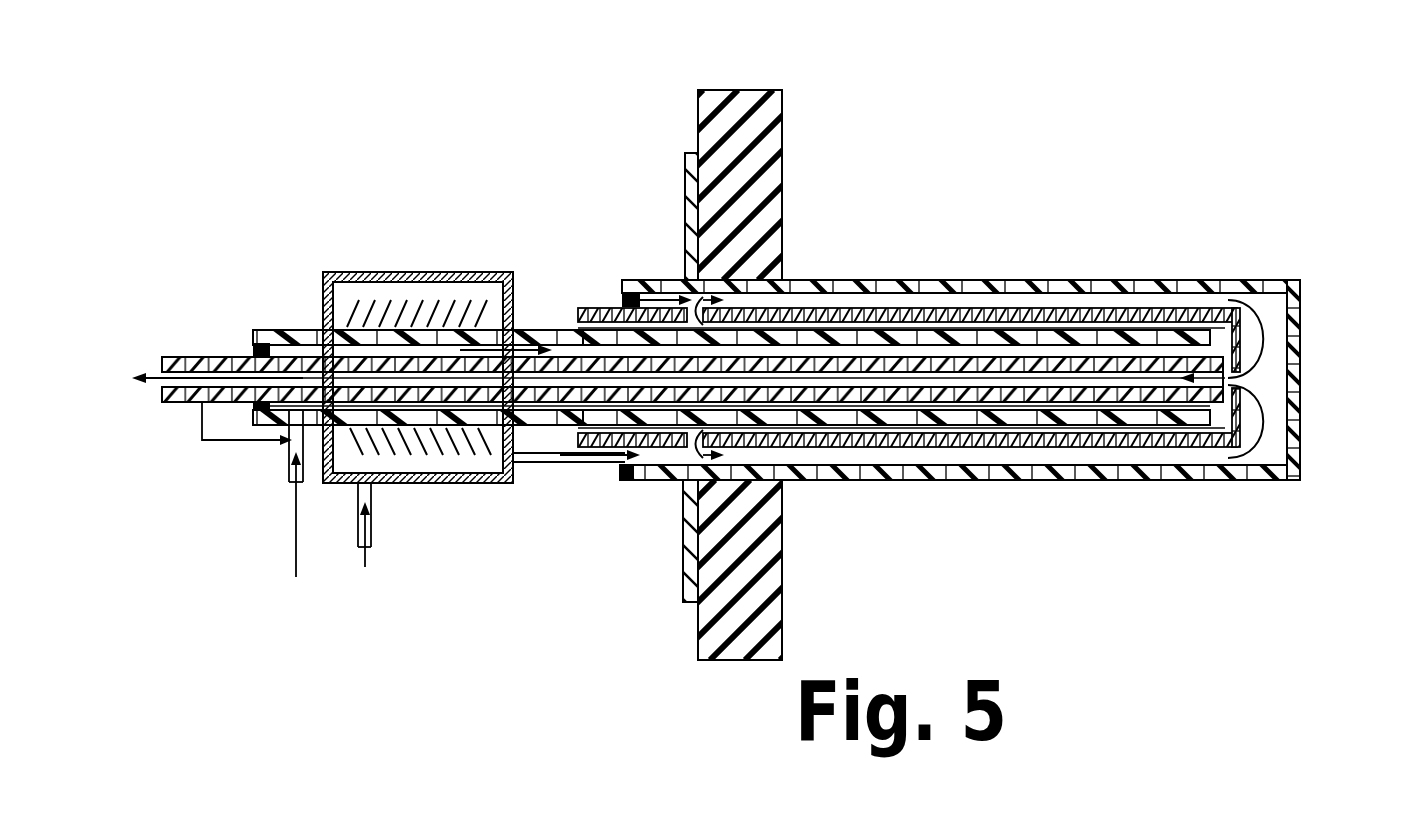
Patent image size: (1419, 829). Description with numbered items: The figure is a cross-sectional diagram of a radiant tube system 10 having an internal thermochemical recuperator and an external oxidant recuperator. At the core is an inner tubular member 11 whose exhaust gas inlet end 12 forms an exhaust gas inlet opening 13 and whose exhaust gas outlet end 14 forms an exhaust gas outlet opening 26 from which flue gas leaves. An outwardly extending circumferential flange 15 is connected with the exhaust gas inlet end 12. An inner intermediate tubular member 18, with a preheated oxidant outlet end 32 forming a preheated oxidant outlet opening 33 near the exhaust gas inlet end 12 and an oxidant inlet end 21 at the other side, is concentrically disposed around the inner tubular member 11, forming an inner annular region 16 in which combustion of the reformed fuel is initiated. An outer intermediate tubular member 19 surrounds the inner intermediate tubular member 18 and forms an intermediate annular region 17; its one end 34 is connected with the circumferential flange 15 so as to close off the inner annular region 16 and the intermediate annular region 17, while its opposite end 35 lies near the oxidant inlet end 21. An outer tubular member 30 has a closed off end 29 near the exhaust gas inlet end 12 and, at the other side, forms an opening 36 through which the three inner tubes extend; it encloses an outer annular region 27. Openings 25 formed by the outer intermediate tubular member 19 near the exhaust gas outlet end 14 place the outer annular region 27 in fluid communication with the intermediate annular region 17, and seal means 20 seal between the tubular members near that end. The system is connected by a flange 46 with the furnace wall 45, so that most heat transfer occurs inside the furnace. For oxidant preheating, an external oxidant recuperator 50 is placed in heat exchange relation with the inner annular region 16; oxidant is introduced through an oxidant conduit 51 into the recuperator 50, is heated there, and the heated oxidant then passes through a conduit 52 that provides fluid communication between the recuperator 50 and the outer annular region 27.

The radiant tube system 10 is at (1068, 210).
The inner tubular member 11 is at (1003, 357).
The exhaust gas inlet end 12 is at (1205, 420).
The exhaust gas inlet opening 13 is at (1168, 335).
The exhaust gas outlet end 14 is at (182, 355).
The outwardly extending circumferential flange 15 is at (1213, 292).
The inner annular region 16 is at (1030, 408).
The intermediate annular region 17 is at (895, 430).
The inner intermediate tubular member 18 is at (918, 330).
The outer intermediate tubular member 19 is at (833, 305).
The seal means 20 is at (620, 298).
The oxidant inlet end 21 is at (270, 420).
The openings 25 is at (690, 240).
The exhaust gas outlet opening 26 is at (160, 372).
The outer annular region 27 is at (1118, 480).
The closed off end 29 is at (1305, 410).
The outer tubular member 30 is at (1097, 280).
The preheated oxidant outlet end 32 is at (1180, 310).
The preheated oxidant outlet opening 33 is at (1210, 472).
The one end 34 is at (1238, 293).
The opposite end 35 is at (590, 310).
The opening 36 is at (605, 307).
The furnace wall 45 is at (698, 140).
The flange 46 is at (683, 602).
The external oxidant recuperator 50 is at (370, 272).
The oxidant conduit 51 is at (371, 520).
The conduit 52 is at (535, 455).